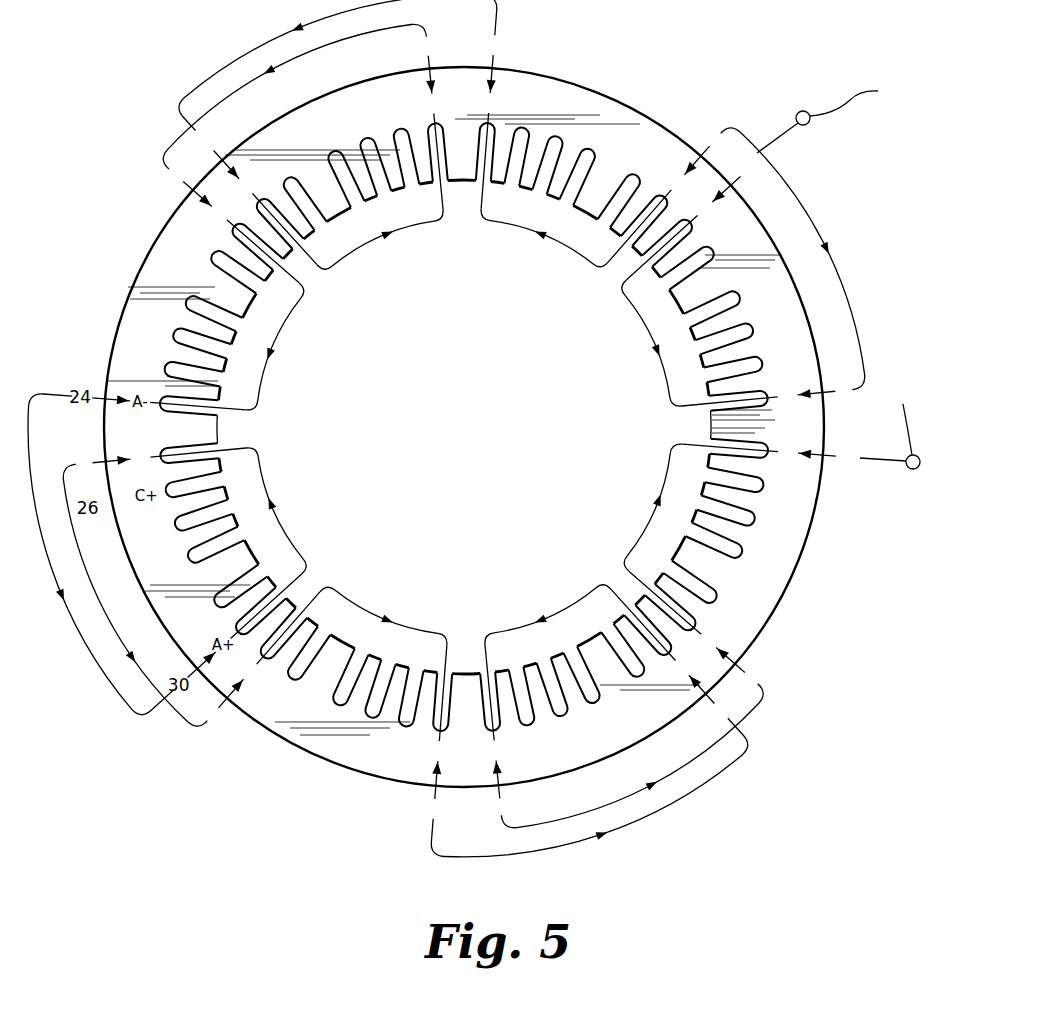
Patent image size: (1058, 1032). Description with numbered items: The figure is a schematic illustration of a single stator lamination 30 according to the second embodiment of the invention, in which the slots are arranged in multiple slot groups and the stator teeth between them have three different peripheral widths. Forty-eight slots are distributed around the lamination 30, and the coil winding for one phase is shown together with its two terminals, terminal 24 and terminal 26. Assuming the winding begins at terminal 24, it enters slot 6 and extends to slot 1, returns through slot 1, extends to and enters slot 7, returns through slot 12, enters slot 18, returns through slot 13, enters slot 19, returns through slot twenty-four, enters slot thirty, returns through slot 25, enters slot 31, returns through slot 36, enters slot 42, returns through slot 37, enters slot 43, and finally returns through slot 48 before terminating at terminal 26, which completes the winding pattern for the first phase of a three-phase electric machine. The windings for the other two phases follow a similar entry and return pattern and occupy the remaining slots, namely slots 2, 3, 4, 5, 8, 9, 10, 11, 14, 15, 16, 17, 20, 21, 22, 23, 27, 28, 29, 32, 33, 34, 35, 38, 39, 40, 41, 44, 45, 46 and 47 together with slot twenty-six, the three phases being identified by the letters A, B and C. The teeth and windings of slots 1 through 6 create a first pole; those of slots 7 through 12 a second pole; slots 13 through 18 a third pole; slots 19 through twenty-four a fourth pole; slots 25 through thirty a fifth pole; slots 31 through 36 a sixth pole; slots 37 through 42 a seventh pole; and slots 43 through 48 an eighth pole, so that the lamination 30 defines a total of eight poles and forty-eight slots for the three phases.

The terminal 24 is at (830, 116).
The terminal 26 is at (890, 420).
The stator lamination 30 is at (806, 563).
The slot 1 is at (768, 397).
The slot 2 is at (776, 359).
The slot 3 is at (767, 323).
The slot 4 is at (753, 289).
The slot 5 is at (725, 240).
The slot 6 is at (692, 221).
The slot 7 is at (666, 195).
The slot 8 is at (646, 162).
The slot 9 is at (597, 134).
The slot 10 is at (563, 120).
The slot 11 is at (526, 111).
The slot 12 is at (488, 120).
The slot 13 is at (434, 121).
The slot 14 is at (395, 112).
The slot 15 is at (359, 122).
The slot 16 is at (325, 135).
The slot 17 is at (276, 163).
The slot 18 is at (256, 198).
The slot 19 is at (230, 223).
The slot 20 is at (198, 244).
The slot 21 is at (170, 293).
The slot 22 is at (157, 328).
The slot 23 is at (148, 364).
The slot 25 is at (157, 456).
The slot 27 is at (159, 530).
The slot 28 is at (172, 566).
The slot 29 is at (200, 615).
The slot 31 is at (260, 659).
The slot 32 is at (281, 693).
The slot 33 is at (330, 721).
The slot 34 is at (365, 734).
The slot 35 is at (401, 743).
The slot 36 is at (439, 733).
The slot 37 is at (493, 733).
The slot 38 is at (531, 742).
The slot 39 is at (568, 732).
The slot 40 is at (603, 718).
The slot 41 is at (652, 690).
The slot 42 is at (671, 656).
The slot 43 is at (696, 630).
The slot 44 is at (730, 610).
The slot 45 is at (758, 561).
The slot 46 is at (771, 525).
The slot 47 is at (780, 489).
The slot 48 is at (770, 450).